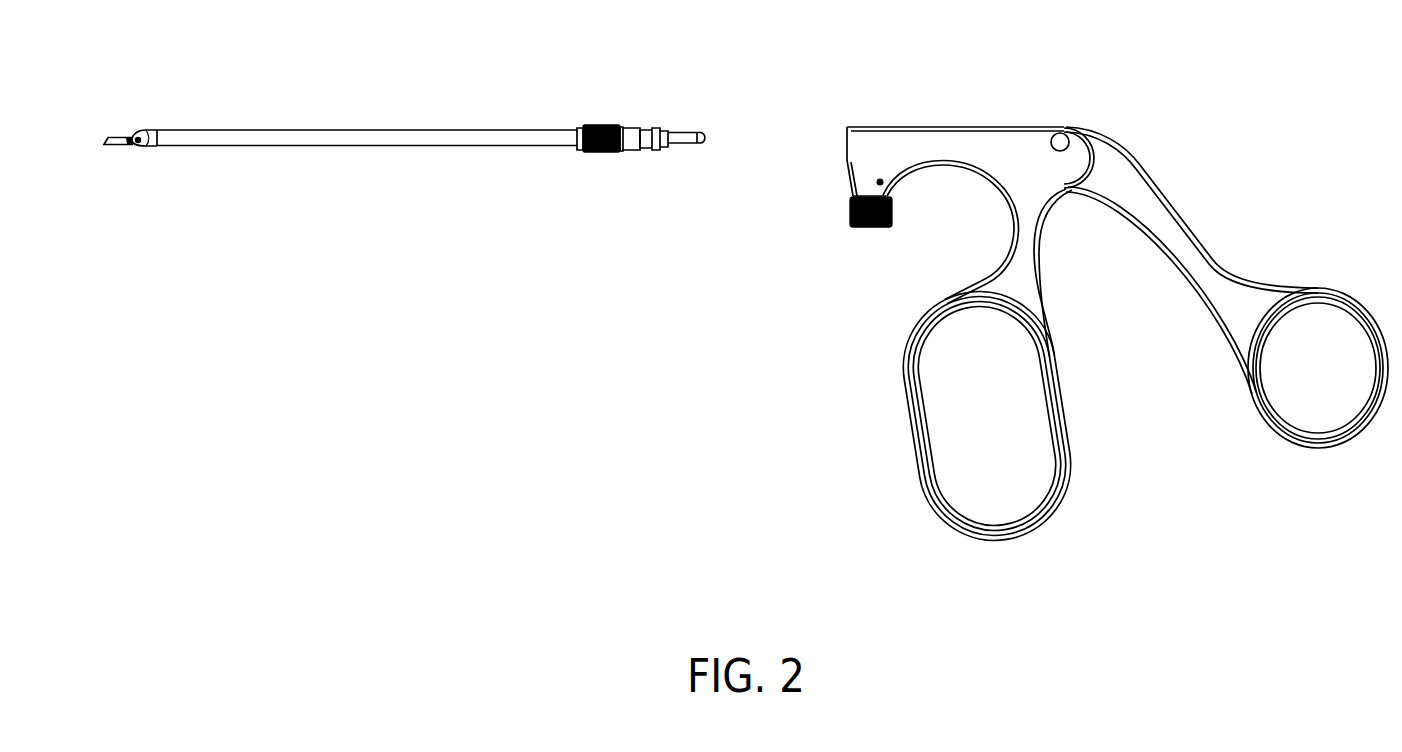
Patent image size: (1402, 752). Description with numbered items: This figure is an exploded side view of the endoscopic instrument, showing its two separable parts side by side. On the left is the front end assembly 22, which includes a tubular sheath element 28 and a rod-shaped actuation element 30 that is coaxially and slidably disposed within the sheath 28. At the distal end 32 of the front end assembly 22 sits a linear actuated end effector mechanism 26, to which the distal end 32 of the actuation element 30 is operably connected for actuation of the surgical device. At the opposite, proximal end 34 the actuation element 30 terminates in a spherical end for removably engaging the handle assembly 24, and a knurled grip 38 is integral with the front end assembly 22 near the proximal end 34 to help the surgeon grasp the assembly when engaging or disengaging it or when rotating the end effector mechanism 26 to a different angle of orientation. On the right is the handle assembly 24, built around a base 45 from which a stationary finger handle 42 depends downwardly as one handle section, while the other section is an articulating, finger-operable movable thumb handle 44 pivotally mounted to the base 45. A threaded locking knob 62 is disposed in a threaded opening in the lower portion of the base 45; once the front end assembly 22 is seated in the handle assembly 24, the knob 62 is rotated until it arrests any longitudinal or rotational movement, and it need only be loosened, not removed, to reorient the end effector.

The front end assembly 22 is at (397, 121).
The handle assembly 24 is at (1085, 106).
The end effector mechanism 26 is at (124, 148).
The tubular sheath element 28 is at (396, 147).
The rod-shaped actuation element 30 is at (676, 150).
The distal end 32 is at (153, 128).
The proximal end 34 is at (703, 130).
The knurled grip 38 is at (600, 153).
The stationary finger handle 42 is at (1080, 427).
The movable thumb handle 44 is at (1365, 432).
The base 45 is at (878, 126).
The threaded locking knob 62 is at (882, 228).